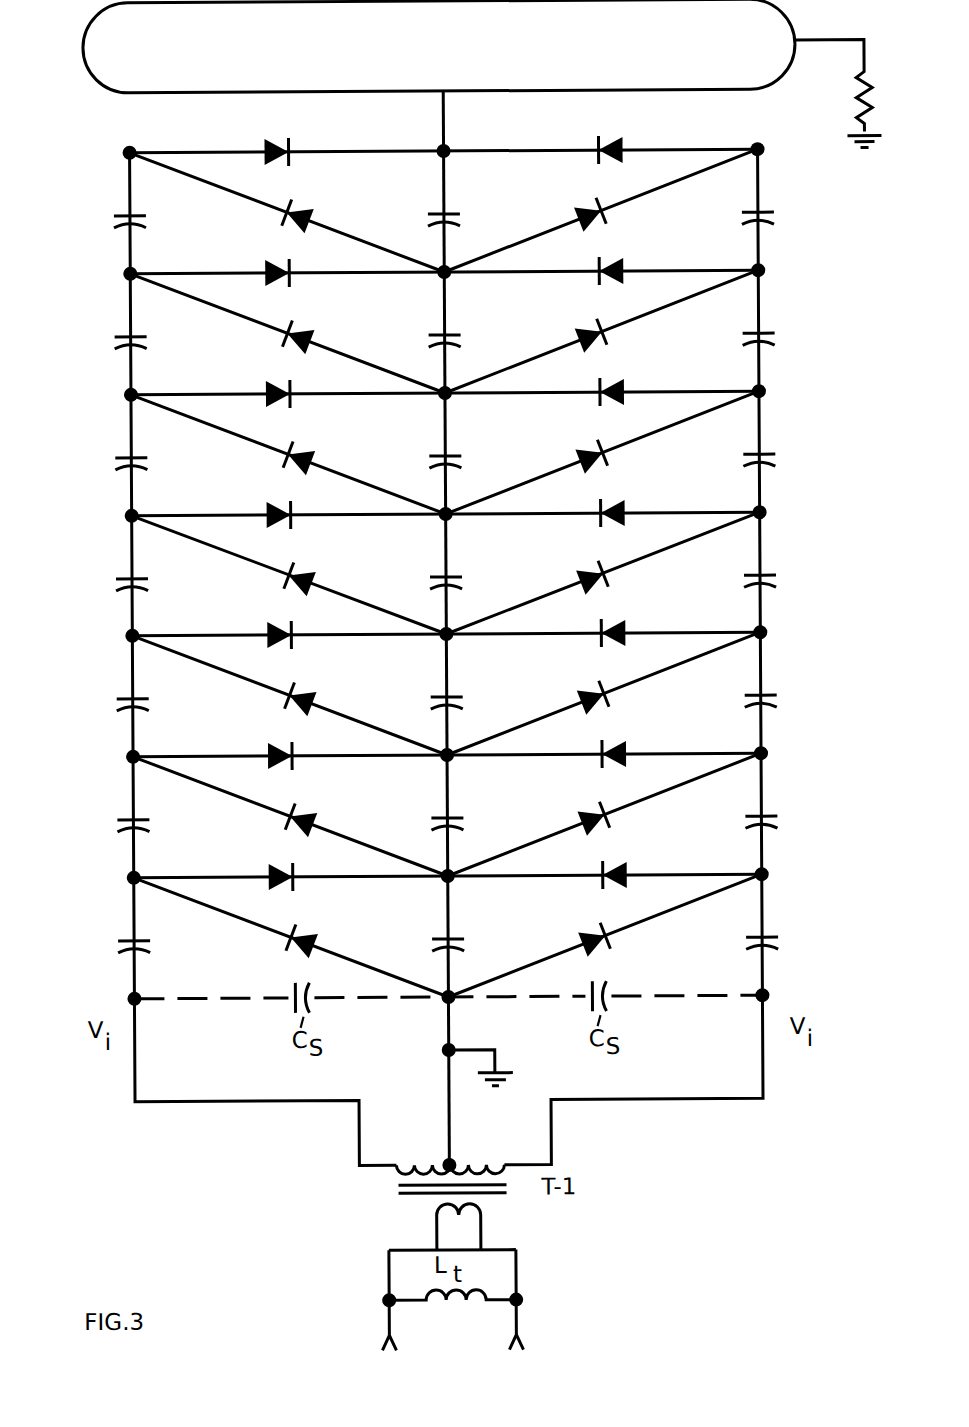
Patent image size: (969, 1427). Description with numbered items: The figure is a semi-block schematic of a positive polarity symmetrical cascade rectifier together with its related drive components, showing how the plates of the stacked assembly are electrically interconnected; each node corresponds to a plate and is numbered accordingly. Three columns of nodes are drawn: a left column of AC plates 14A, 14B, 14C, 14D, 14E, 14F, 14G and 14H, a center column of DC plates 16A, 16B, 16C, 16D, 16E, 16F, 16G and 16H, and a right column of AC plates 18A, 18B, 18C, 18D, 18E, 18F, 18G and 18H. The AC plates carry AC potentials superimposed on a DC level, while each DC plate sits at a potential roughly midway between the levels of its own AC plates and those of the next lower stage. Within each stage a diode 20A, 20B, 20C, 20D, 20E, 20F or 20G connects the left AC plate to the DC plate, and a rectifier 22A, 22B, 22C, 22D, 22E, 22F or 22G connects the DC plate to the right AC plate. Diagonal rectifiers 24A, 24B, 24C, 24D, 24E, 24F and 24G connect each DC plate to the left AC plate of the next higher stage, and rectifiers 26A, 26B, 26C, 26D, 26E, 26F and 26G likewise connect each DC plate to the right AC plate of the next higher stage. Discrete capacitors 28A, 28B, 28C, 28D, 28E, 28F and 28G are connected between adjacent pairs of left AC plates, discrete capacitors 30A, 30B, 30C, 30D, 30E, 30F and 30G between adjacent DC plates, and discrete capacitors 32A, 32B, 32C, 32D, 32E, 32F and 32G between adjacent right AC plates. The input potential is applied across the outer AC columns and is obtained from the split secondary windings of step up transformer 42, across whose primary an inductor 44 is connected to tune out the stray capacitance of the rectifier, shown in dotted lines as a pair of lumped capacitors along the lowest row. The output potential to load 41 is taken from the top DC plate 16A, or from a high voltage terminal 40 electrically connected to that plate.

The high voltage terminal 40 is at (438, 55).
The load 41 is at (860, 102).
The step up transformer 42 is at (480, 1197).
The inductor 44 is at (450, 1306).
The AC plate 14A is at (125, 151).
The AC plate 14B is at (125, 272).
The AC plate 14C is at (125, 393).
The AC plate 14D is at (125, 514).
The AC plate 14E is at (125, 634).
The AC plate 14F is at (125, 755).
The AC plate 14G is at (125, 876).
The AC plate 14H is at (125, 997).
The DC plate 16A is at (448, 149).
The DC plate 16B is at (451, 268).
The DC plate 16C is at (451, 389).
The DC plate 16D is at (451, 510).
The DC plate 16E is at (451, 630).
The DC plate 16F is at (451, 751).
The DC plate 16G is at (451, 872).
The DC plate 16H is at (451, 993).
The AC plate 18A is at (793, 150).
The AC plate 18B is at (793, 271).
The AC plate 18C is at (793, 392).
The AC plate 18D is at (793, 513).
The AC plate 18E is at (793, 633).
The AC plate 18F is at (793, 754).
The AC plate 18G is at (793, 875).
The AC plate 18H is at (793, 996).
The diode 20A is at (276, 138).
The diode 20B is at (274, 260).
The diode 20C is at (274, 381).
The diode 20D is at (274, 502).
The diode 20E is at (274, 622).
The diode 20F is at (274, 743).
The diode 20G is at (274, 864).
The rectifier 22A is at (612, 138).
The rectifier 22B is at (621, 264).
The rectifier 22C is at (621, 385).
The rectifier 22D is at (621, 506).
The rectifier 22E is at (621, 626).
The rectifier 22F is at (621, 747).
The rectifier 22G is at (621, 868).
The rectifier 24A is at (305, 207).
The rectifier 24B is at (305, 328).
The rectifier 24C is at (305, 449).
The rectifier 24D is at (305, 570).
The rectifier 24E is at (305, 690).
The rectifier 24F is at (305, 811).
The rectifier 24G is at (305, 932).
The rectifier 26A is at (587, 207).
The rectifier 26B is at (587, 328).
The rectifier 26C is at (587, 449).
The rectifier 26D is at (587, 570).
The rectifier 26E is at (587, 690).
The rectifier 26F is at (587, 811).
The rectifier 26G is at (587, 932).
The discrete capacitor 28A is at (114, 218).
The discrete capacitor 28B is at (114, 339).
The discrete capacitor 28C is at (114, 460).
The discrete capacitor 28D is at (114, 581).
The discrete capacitor 28E is at (114, 701).
The discrete capacitor 28F is at (114, 822).
The discrete capacitor 28G is at (114, 943).
The discrete capacitor 30A is at (455, 212).
The discrete capacitor 30B is at (455, 333).
The discrete capacitor 30C is at (455, 454).
The discrete capacitor 30D is at (455, 575).
The discrete capacitor 30E is at (455, 695).
The discrete capacitor 30F is at (455, 816).
The discrete capacitor 30G is at (455, 937).
The discrete capacitor 32A is at (783, 221).
The discrete capacitor 32B is at (783, 342).
The discrete capacitor 32C is at (783, 463).
The discrete capacitor 32D is at (783, 584).
The discrete capacitor 32E is at (783, 704).
The discrete capacitor 32F is at (783, 825).
The discrete capacitor 32G is at (783, 946).